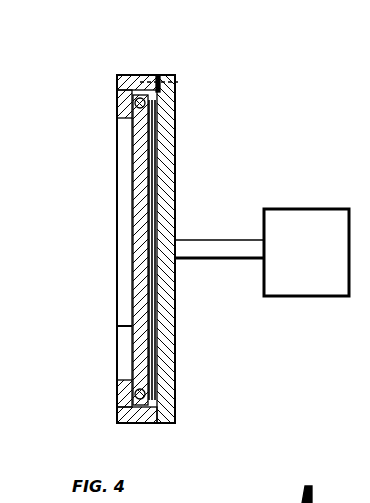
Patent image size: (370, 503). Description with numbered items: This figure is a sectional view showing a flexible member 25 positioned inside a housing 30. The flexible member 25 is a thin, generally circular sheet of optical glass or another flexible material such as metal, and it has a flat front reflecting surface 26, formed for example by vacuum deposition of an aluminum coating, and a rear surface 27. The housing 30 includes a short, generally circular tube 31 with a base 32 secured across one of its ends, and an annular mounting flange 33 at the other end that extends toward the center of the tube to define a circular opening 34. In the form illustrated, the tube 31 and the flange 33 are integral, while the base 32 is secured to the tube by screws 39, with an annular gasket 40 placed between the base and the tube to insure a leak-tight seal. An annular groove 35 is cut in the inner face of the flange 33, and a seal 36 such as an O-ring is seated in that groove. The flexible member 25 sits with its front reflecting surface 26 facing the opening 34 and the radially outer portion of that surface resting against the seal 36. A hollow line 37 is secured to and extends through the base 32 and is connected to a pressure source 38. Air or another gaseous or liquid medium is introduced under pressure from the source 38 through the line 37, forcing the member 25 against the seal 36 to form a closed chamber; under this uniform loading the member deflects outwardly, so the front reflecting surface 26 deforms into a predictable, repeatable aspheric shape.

The flexible member 25 is at (118, 327).
The front reflecting surface 26 is at (137, 254).
The rear surface 27 is at (137, 299).
The housing 30 is at (184, 70).
The tube 31 is at (120, 75).
The base 32 is at (173, 185).
The annular mounting flange 33 is at (120, 90).
The circular opening 34 is at (120, 218).
The annular groove 35 is at (130, 385).
The seal 36 is at (133, 106).
The hollow line 37 is at (213, 248).
The pressure source 38 is at (321, 259).
The screws 39 is at (175, 85).
The annular gasket 40 is at (158, 75).